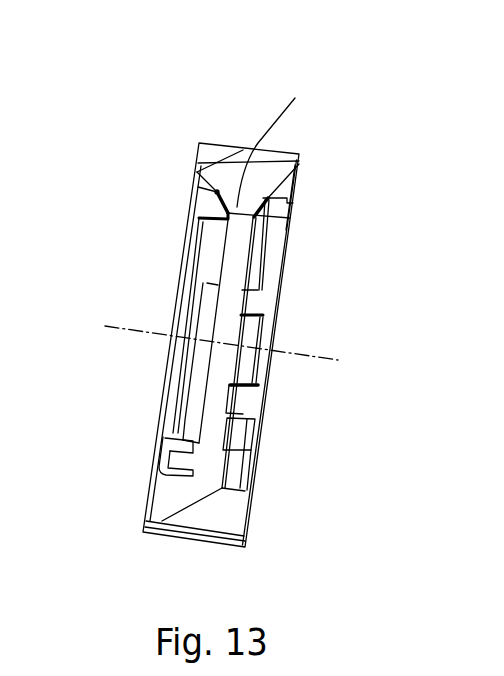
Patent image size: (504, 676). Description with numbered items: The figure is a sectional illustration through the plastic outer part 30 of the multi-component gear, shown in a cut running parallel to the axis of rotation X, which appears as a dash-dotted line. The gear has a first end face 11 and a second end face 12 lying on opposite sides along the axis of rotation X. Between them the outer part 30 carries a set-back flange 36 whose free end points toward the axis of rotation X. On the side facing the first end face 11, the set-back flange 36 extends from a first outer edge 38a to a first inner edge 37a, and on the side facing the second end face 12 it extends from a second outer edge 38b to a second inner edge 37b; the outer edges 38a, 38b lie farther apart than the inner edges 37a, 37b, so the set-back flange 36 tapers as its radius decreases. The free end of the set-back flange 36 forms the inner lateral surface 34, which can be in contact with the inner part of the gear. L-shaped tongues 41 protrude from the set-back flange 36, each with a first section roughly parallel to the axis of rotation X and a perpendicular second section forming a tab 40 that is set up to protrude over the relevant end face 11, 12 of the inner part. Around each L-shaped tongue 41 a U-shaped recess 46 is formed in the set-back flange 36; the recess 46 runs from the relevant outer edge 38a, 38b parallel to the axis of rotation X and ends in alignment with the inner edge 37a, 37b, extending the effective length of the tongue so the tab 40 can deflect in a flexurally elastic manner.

The outer part 30 is at (212, 118).
The first end face 11 is at (143, 530).
The second end face 12 is at (250, 513).
The inner lateral surface 34 is at (204, 467).
The set-back flange 36 is at (270, 141).
The first inner edge 37a is at (227, 215).
The second inner edge 37b is at (290, 220).
The first outer edge 38a is at (197, 172).
The second outer edge 38b is at (300, 163).
The tab 40 is at (208, 247).
The L-shaped tongue 41 is at (250, 366).
The U-shaped recess 46 is at (160, 472).
The axis of rotation X is at (322, 360).